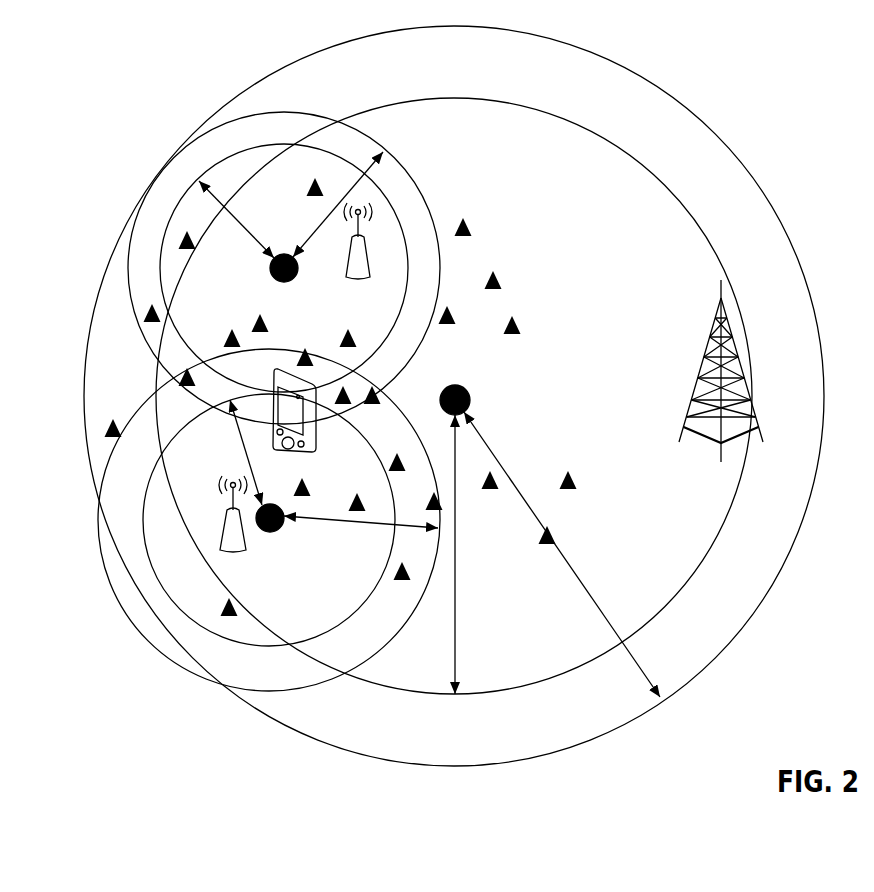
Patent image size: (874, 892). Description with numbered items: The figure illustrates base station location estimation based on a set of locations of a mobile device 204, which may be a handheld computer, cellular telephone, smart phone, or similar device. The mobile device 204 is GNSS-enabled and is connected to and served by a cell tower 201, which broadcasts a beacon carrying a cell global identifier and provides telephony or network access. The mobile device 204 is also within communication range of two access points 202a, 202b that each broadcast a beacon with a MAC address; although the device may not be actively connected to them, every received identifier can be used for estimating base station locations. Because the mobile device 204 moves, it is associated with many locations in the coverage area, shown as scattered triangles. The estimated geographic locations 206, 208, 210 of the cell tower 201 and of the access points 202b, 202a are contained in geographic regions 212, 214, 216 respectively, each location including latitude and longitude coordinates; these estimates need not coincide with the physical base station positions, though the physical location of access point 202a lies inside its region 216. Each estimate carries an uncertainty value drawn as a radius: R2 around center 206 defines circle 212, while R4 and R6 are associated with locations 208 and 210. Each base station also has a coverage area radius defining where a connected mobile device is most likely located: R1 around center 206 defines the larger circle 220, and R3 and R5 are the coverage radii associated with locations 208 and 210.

The cell tower 201 is at (703, 440).
The access point 202a is at (246, 552).
The access point 202b is at (346, 278).
The mobile device 204 is at (318, 447).
The estimated geographic location 206 is at (468, 408).
The estimated geographic location 208 is at (274, 277).
The estimated geographic location 210 is at (283, 523).
The geographic region 212 is at (683, 588).
The geographic region 214 is at (397, 337).
The geographic region 216 is at (381, 590).
The circle 220 is at (810, 500).
The coverage area radius R1 is at (580, 587).
The uncertainty radius R2 is at (457, 515).
The coverage area radius R3 is at (407, 175).
The uncertainty radius R4 is at (258, 232).
The coverage area radius R5 is at (350, 521).
The uncertainty radius R6 is at (240, 441).